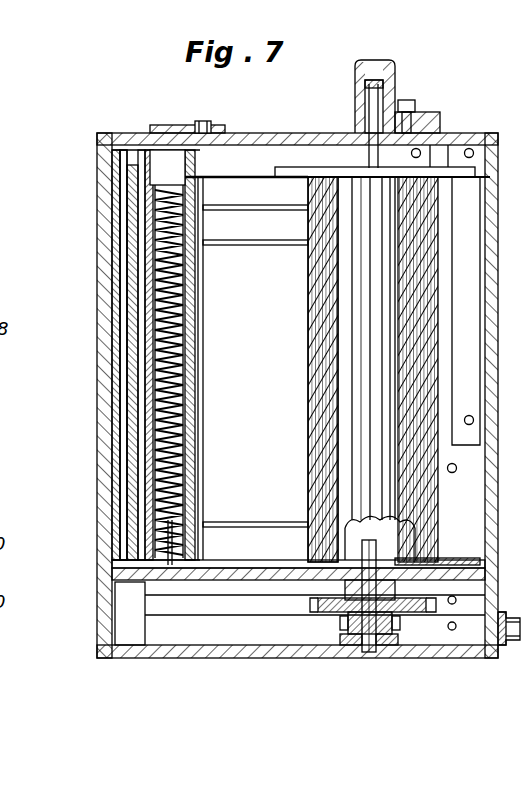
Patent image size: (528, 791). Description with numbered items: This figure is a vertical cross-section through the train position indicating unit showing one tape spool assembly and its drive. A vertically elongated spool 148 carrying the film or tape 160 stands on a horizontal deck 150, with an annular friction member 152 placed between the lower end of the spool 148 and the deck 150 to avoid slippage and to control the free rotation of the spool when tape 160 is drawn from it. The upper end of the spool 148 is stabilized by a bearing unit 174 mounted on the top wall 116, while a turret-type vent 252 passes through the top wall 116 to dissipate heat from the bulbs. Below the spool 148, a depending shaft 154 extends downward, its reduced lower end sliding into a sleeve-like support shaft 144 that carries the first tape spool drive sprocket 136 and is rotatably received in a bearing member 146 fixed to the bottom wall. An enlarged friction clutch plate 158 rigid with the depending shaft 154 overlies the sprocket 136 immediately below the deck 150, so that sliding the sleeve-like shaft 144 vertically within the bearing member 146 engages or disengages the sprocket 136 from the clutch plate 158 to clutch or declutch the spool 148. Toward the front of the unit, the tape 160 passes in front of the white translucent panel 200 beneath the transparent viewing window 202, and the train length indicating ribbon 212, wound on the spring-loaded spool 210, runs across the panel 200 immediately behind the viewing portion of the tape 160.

The top wall 116 is at (266, 133).
The bearing unit 174 is at (370, 72).
The spool 148 is at (355, 259).
The tape 160 is at (115, 396).
The viewing window 202 is at (115, 343).
The train length indicating ribbon 212 is at (116, 437).
The translucent panel 200 is at (120, 472).
The spring-loaded spool 210 is at (190, 403).
The annular friction member 152 is at (320, 556).
The depending shaft 154 is at (372, 548).
The deck 150 is at (448, 566).
The friction clutch plate 158 is at (318, 606).
The first tape spool drive sprocket 136 is at (320, 622).
The sleeve-like support shaft 144 is at (360, 645).
The bearing member 146 is at (397, 645).
The turret-type vent 252 is at (500, 645).